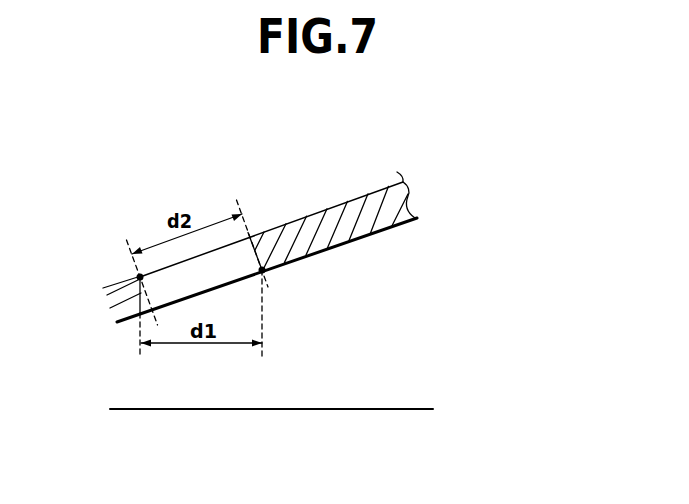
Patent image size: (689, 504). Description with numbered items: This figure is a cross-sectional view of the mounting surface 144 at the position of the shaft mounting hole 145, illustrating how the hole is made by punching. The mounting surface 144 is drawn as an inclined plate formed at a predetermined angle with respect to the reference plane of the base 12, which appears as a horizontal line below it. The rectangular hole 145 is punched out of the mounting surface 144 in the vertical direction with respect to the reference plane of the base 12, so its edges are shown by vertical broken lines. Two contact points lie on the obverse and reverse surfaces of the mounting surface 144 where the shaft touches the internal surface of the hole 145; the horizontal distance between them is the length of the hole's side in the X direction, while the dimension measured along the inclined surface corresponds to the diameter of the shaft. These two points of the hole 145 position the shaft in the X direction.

The mounting surface 144 is at (355, 207).
The shaft mounting hole 145 is at (262, 243).
The base 12 is at (343, 411).